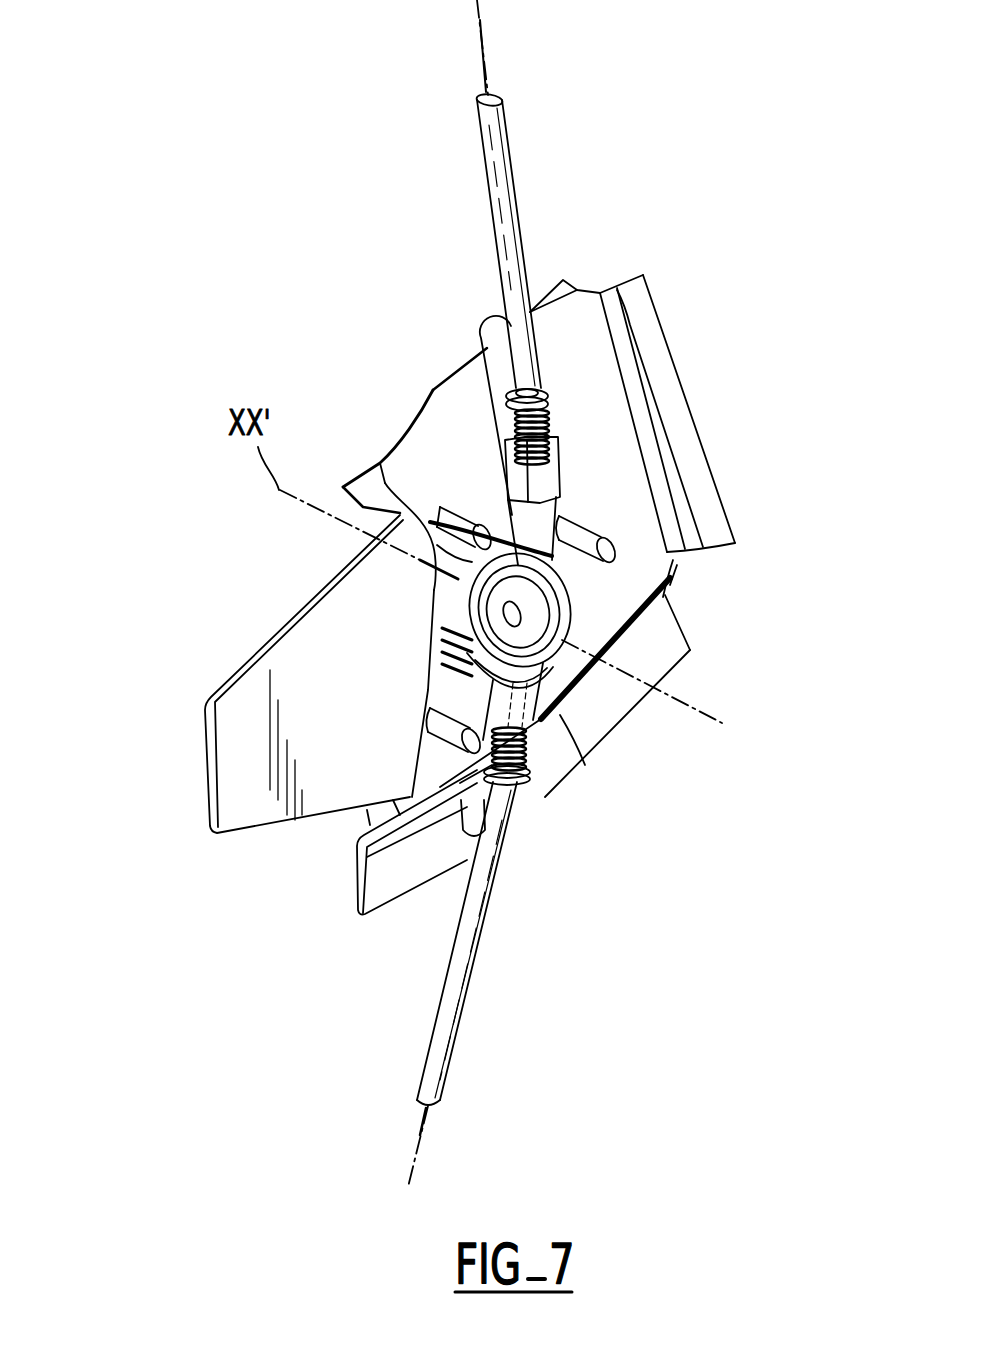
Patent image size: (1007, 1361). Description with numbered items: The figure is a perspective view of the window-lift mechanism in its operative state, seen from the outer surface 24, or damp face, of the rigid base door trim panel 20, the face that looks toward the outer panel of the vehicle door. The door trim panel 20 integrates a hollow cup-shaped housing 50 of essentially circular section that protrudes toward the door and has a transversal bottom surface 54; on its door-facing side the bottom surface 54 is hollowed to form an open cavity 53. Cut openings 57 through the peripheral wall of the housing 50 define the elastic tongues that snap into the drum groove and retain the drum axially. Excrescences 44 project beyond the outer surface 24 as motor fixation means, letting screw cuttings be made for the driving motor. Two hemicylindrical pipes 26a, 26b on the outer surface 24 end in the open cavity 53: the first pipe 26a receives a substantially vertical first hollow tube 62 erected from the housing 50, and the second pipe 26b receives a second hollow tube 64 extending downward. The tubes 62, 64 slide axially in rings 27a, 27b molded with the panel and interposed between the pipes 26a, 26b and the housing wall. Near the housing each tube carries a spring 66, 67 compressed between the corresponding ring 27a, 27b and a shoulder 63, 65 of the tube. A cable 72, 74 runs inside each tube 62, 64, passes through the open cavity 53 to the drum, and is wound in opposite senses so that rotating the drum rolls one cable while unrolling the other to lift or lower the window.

The door trim panel 20 is at (650, 300).
The outer surface 24 is at (287, 665).
The first pipe 26a is at (500, 338).
The second pipe 26b is at (367, 857).
The first ring 27a is at (548, 483).
The second ring 27b is at (545, 715).
The excrescence 44 is at (617, 548).
The cup-shaped housing 50 is at (475, 606).
The open cavity 53 is at (560, 637).
The bottom surface 54 is at (557, 635).
The cut openings 57 is at (455, 570).
The first hollow tube 62 is at (505, 143).
The shoulder 63 is at (505, 412).
The second hollow tube 64 is at (450, 1046).
The shoulder 65 is at (468, 835).
The spring 66 is at (550, 423).
The spring 67 is at (538, 758).
The cable 72 is at (482, 53).
The cable 74 is at (410, 1172).